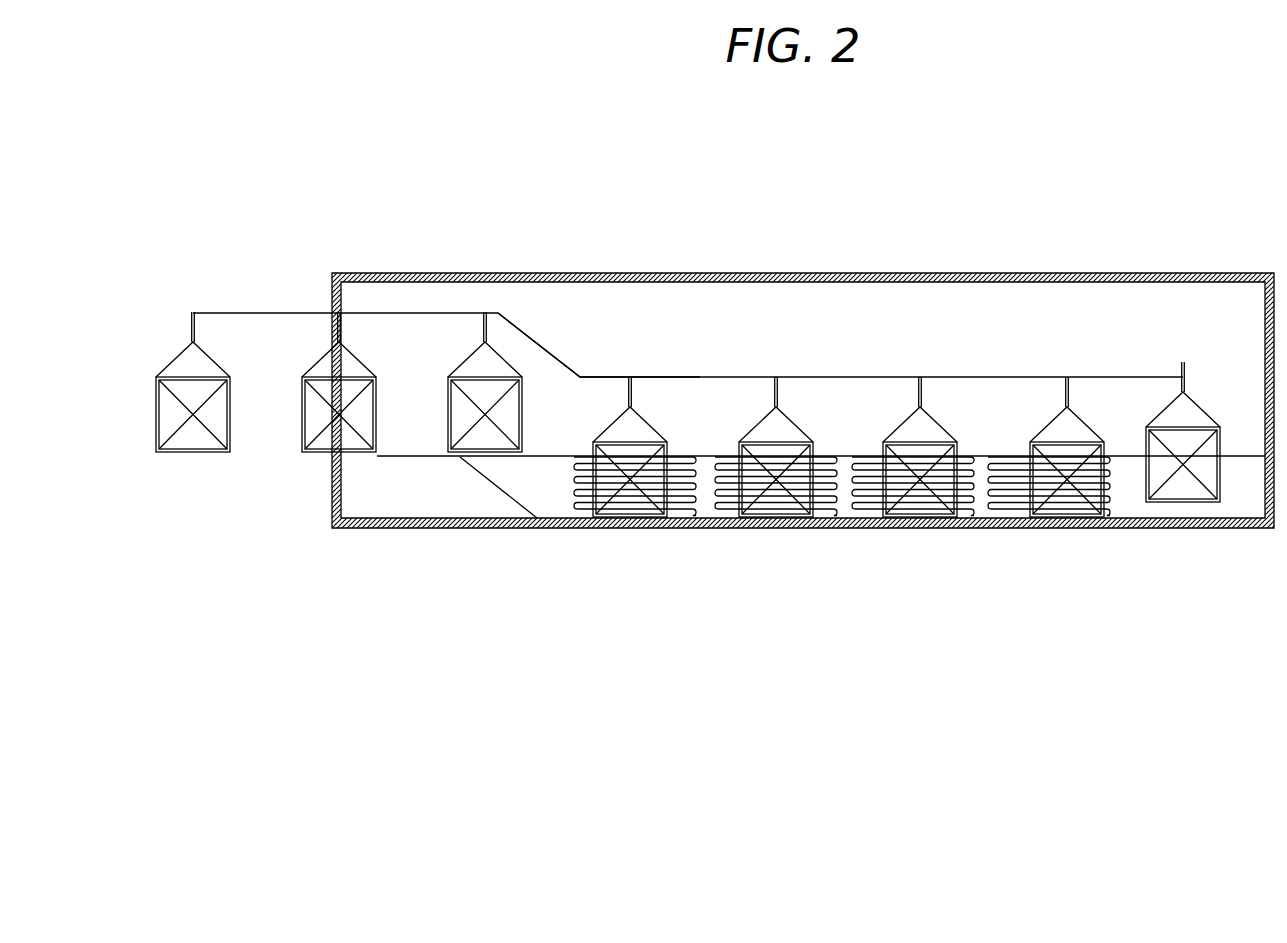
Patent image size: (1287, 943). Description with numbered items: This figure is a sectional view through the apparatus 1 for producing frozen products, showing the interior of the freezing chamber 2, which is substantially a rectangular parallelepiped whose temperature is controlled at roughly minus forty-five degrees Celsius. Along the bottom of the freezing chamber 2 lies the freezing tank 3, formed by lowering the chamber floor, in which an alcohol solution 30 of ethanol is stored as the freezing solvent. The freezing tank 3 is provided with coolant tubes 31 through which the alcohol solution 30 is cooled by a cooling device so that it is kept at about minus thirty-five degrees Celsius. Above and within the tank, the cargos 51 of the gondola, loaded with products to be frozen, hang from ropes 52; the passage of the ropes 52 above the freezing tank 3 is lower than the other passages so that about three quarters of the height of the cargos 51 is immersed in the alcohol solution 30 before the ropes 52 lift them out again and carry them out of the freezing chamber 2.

The apparatus for producing frozen products 1 is at (998, 109).
The freezing chamber 2 is at (1265, 328).
The freezing tank 3 is at (995, 410).
The alcohol solution 30 is at (1247, 456).
The coolant tubes 31 is at (703, 500).
The cargos 51 is at (450, 418).
The ropes 52 is at (543, 348).